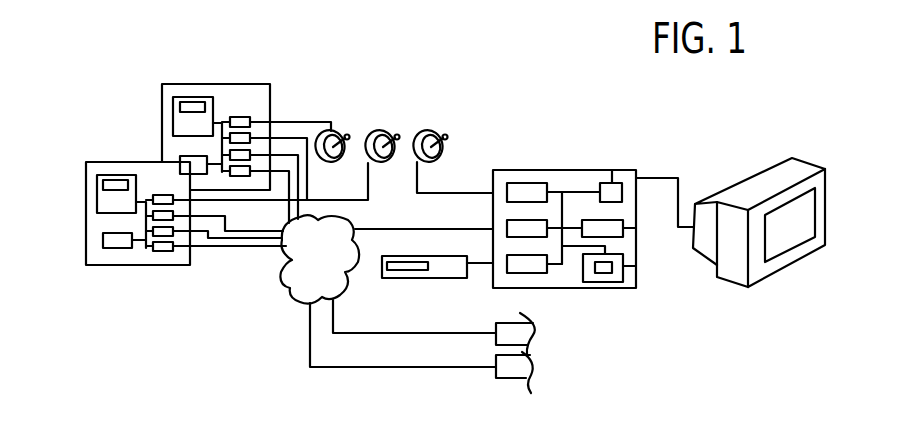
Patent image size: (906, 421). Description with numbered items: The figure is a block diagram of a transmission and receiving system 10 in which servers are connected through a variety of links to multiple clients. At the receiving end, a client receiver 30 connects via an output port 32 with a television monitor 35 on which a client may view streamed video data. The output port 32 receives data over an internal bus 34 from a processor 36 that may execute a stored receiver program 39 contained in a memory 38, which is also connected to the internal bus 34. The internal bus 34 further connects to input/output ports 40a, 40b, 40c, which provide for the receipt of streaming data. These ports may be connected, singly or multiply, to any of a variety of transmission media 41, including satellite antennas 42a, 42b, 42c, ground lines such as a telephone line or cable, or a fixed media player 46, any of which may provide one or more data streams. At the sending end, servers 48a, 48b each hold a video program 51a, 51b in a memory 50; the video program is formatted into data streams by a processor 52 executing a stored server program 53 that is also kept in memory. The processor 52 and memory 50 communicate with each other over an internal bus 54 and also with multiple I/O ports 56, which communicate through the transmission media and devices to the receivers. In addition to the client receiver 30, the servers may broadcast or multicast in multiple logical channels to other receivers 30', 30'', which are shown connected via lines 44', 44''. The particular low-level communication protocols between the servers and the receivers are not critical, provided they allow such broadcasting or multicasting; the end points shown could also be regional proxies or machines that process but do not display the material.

The monitoring system 10 is at (265, 415).
The client receiver 30 is at (558, 239).
The receiver 30' is at (532, 328).
The receiver 30'' is at (534, 372).
The output port 32 is at (612, 170).
The internal bus 34 is at (566, 253).
The television monitor 35 is at (772, 183).
The processor 36 is at (625, 229).
The memory 38 is at (636, 266).
The stored receiver program 39 is at (602, 274).
The input/output port 40a is at (528, 183).
The input/output port 40b is at (528, 220).
The input/output port 40c is at (528, 273).
The transmission media 41 is at (380, 76).
The satellite antenna 42a is at (338, 131).
The satellite antenna 42b is at (392, 131).
The satellite antenna 42c is at (440, 131).
The line 44' is at (414, 332).
The line 44'' is at (403, 353).
The fixed media player 46 is at (425, 279).
The server 48a is at (191, 112).
The server 48b is at (122, 233).
The memory 50 is at (97, 194).
The video program 51a is at (117, 180).
The video program 51b is at (192, 101).
The processor 52 is at (103, 241).
The stored server program 53 is at (117, 249).
The internal bus 54 is at (146, 224).
The I/O ports 56 is at (164, 252).